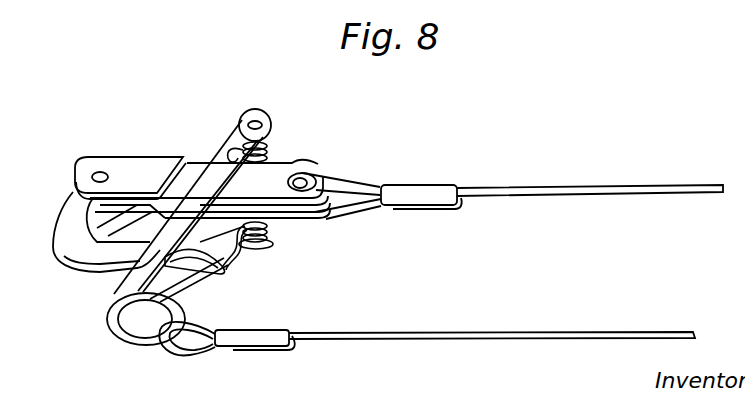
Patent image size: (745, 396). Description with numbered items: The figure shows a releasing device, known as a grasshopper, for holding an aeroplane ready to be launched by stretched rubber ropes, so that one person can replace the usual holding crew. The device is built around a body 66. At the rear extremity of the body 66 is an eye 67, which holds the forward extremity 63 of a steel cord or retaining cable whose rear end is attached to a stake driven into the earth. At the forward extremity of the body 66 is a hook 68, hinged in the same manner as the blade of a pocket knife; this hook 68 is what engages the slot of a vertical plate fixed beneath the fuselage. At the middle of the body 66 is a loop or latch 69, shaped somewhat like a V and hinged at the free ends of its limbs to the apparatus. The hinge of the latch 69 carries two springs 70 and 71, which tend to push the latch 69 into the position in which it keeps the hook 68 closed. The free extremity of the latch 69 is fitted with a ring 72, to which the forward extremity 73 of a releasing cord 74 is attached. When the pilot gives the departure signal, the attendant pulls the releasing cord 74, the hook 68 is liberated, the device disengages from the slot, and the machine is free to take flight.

The forward extremity of the retaining cable 63 is at (363, 212).
The body 66 is at (297, 169).
The eye 67 is at (314, 176).
The hook 68 is at (70, 217).
The loop or latch 69 is at (213, 163).
The spring 70 is at (272, 143).
The spring 71 is at (262, 227).
The ring 72 is at (134, 340).
The forward extremity of the releasing cord 73 is at (200, 349).
The releasing cord 74 is at (330, 334).